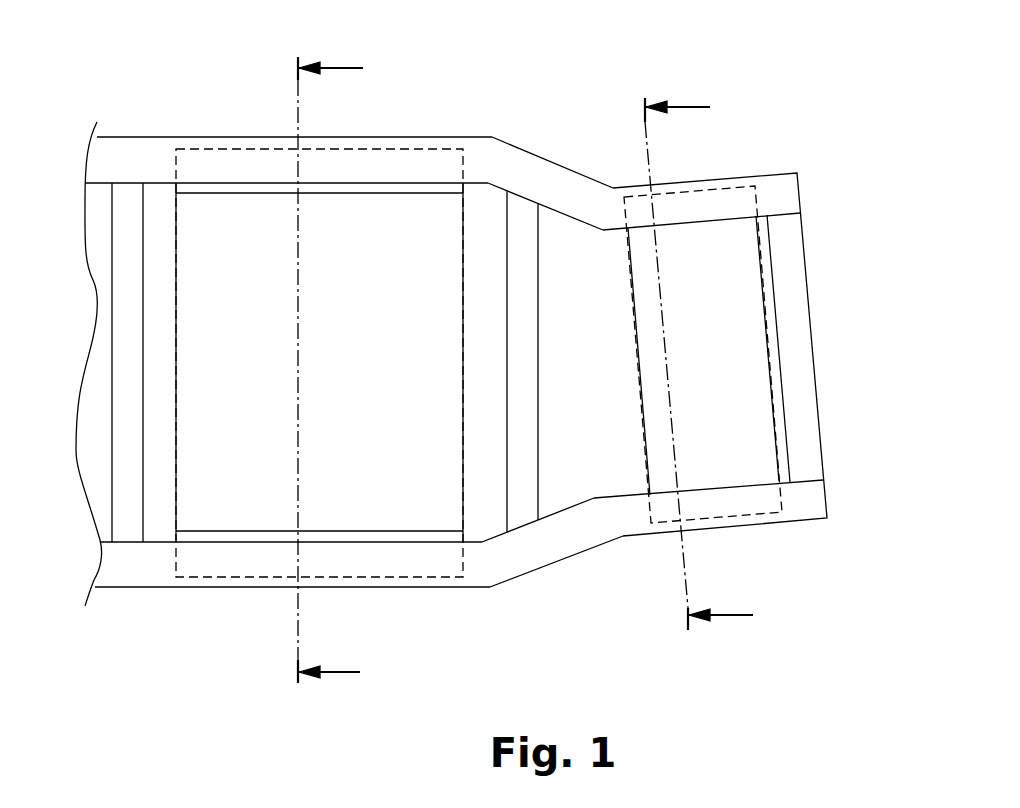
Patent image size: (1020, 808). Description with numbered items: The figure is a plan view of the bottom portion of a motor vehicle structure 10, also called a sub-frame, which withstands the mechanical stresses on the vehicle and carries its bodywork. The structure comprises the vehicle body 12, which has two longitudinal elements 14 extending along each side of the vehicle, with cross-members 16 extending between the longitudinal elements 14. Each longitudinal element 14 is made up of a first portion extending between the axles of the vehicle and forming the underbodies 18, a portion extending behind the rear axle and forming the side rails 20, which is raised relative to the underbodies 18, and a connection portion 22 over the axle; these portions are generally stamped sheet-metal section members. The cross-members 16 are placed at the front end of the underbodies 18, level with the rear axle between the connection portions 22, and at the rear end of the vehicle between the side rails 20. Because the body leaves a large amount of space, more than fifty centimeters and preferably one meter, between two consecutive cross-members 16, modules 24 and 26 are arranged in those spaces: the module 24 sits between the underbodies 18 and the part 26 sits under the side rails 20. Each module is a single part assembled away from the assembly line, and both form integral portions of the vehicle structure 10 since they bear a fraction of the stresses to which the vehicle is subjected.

The motor vehicle structure 10 is at (638, 45).
The vehicle body 12 is at (828, 218).
The longitudinal element 14 is at (375, 116).
The cross-member 16 is at (127, 382).
The underbody 18 is at (209, 168).
The side rail 20 is at (692, 210).
The connection portion 22 is at (527, 181).
The module 24 is at (230, 490).
The module 26 is at (710, 455).